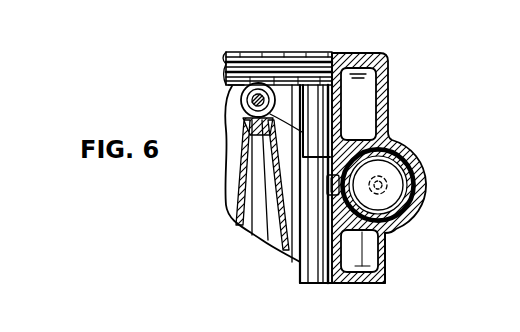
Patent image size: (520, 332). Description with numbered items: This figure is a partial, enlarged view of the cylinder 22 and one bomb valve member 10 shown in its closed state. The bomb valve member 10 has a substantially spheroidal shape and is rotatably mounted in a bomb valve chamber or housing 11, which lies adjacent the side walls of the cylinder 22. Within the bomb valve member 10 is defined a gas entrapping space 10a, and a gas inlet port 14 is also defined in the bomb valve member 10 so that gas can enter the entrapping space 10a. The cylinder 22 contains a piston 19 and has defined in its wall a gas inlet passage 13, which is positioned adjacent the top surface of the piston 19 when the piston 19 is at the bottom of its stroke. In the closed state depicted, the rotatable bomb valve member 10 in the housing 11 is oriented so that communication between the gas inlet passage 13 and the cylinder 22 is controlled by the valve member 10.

The bomb valve member 10 is at (398, 230).
The gas entrapping space 10a is at (394, 173).
The bomb valve chamber 11 is at (386, 146).
The gas inlet passage 13 is at (337, 182).
The gas inlet port 14 is at (400, 186).
The piston 19 is at (244, 53).
The cylinder 22 is at (346, 50).